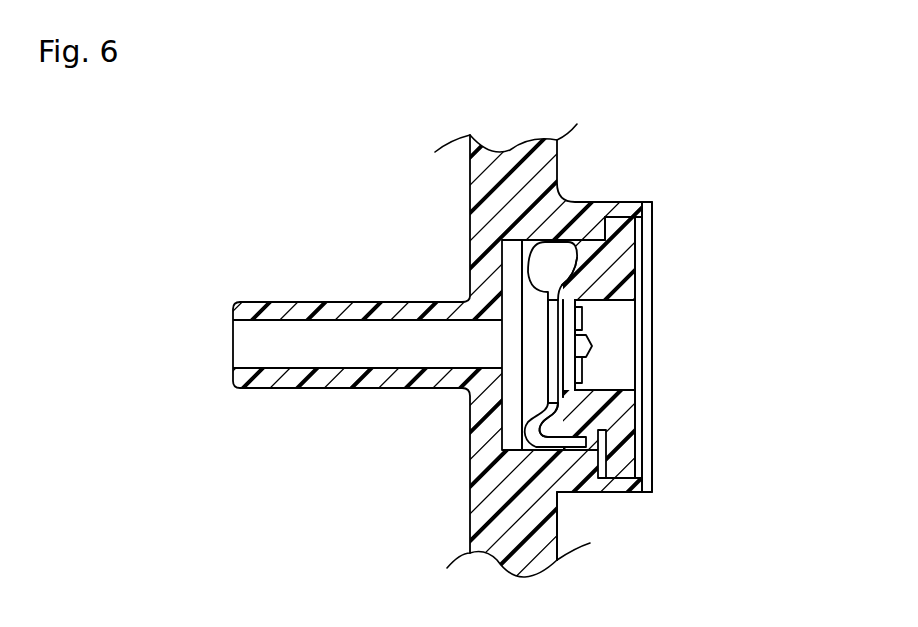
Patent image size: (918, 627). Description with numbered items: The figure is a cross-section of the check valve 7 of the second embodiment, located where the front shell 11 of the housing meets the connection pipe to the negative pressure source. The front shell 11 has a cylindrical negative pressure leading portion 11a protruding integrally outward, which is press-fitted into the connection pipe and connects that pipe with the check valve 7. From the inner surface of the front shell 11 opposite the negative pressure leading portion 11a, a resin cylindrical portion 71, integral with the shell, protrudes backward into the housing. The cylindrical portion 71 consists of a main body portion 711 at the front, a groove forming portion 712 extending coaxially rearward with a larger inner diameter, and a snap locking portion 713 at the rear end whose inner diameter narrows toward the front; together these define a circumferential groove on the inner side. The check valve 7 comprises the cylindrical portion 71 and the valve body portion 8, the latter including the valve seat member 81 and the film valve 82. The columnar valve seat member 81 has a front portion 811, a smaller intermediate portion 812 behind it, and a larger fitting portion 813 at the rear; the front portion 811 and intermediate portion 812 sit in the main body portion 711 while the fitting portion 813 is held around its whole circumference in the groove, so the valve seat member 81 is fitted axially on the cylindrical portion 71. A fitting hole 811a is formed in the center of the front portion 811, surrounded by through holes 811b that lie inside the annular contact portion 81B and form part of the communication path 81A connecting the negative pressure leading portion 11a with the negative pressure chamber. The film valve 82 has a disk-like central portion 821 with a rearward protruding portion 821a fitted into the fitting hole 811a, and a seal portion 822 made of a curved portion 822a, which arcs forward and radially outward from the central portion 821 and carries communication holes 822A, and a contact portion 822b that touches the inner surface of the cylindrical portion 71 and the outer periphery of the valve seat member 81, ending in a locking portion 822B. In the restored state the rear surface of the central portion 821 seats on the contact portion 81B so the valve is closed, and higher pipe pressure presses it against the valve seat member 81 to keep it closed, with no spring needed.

The check valve 7 is at (218, 121).
The front shell 11 is at (470, 173).
The negative pressure leading portion 11a is at (253, 300).
The cylindrical portion 71 is at (765, 135).
The main body portion 711 is at (590, 213).
The groove forming portion 712 is at (630, 214).
The snap locking portion 713 is at (652, 215).
The valve body portion 8 is at (767, 211).
The valve seat member 81 is at (775, 505).
The front portion 811 is at (585, 435).
The fitting hole 811a is at (592, 347).
The through holes 811b is at (582, 312).
The communication path 81A is at (640, 383).
The contact portion 81B is at (515, 300).
The intermediate portion 812 is at (602, 470).
The fitting portion 813 is at (628, 448).
The film valve 82 is at (300, 497).
The central portion 821 is at (500, 400).
The protruding portion 821a is at (500, 347).
The seal portion 822 is at (385, 520).
The communication holes 822A is at (513, 262).
The locking portion 822B is at (577, 288).
The curved portion 822a is at (498, 450).
The contact portion 822b is at (580, 440).